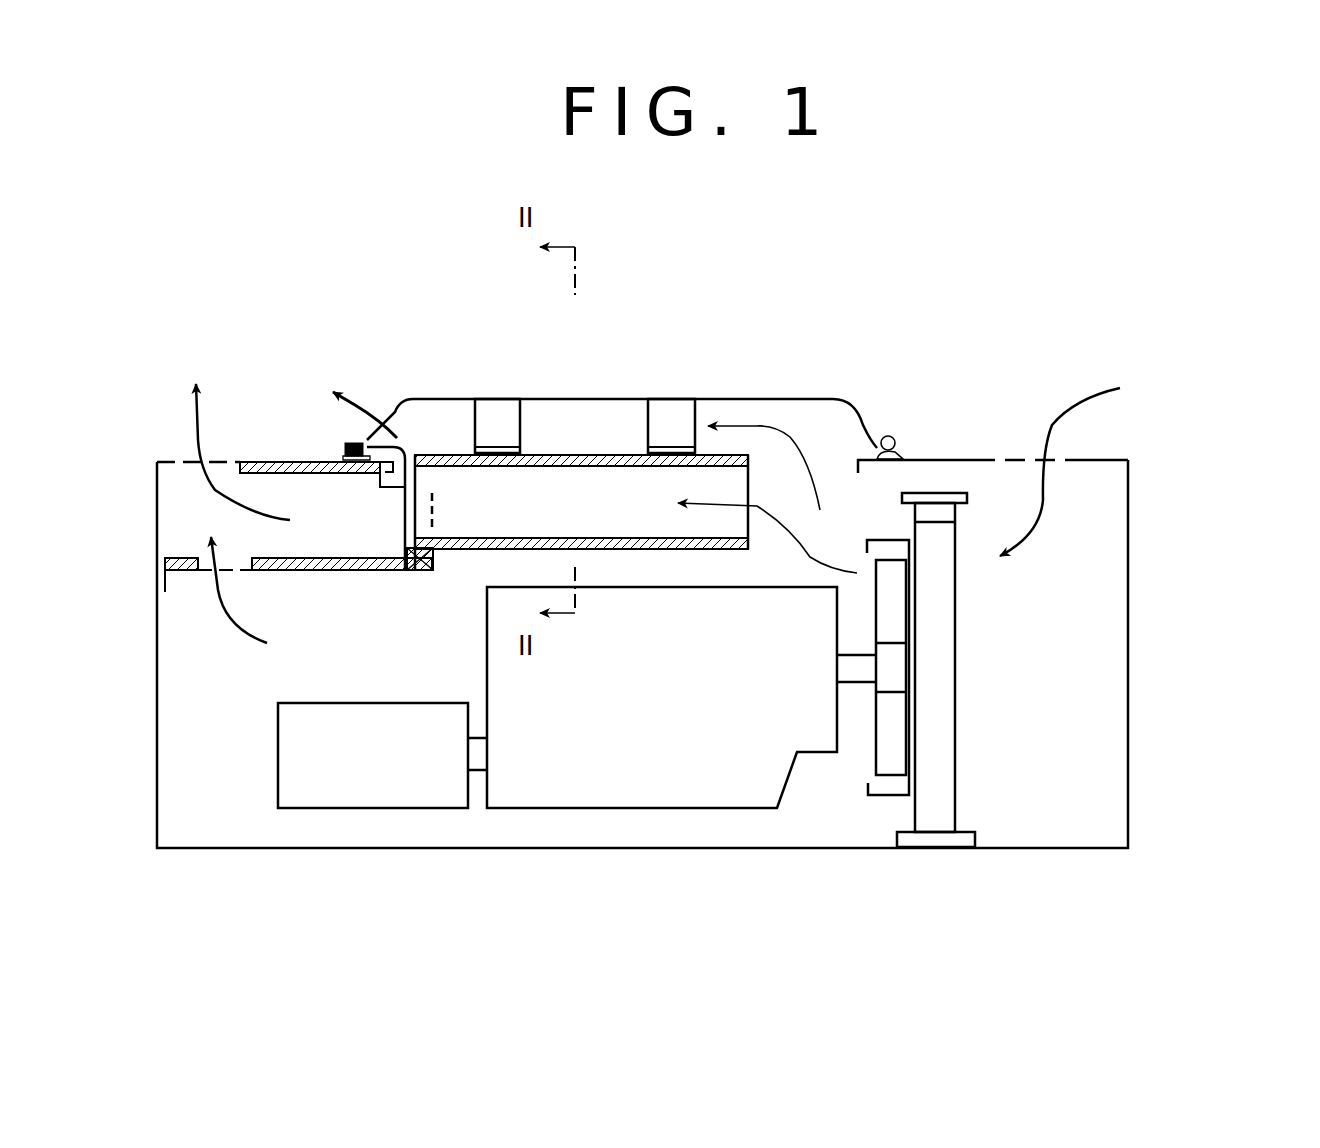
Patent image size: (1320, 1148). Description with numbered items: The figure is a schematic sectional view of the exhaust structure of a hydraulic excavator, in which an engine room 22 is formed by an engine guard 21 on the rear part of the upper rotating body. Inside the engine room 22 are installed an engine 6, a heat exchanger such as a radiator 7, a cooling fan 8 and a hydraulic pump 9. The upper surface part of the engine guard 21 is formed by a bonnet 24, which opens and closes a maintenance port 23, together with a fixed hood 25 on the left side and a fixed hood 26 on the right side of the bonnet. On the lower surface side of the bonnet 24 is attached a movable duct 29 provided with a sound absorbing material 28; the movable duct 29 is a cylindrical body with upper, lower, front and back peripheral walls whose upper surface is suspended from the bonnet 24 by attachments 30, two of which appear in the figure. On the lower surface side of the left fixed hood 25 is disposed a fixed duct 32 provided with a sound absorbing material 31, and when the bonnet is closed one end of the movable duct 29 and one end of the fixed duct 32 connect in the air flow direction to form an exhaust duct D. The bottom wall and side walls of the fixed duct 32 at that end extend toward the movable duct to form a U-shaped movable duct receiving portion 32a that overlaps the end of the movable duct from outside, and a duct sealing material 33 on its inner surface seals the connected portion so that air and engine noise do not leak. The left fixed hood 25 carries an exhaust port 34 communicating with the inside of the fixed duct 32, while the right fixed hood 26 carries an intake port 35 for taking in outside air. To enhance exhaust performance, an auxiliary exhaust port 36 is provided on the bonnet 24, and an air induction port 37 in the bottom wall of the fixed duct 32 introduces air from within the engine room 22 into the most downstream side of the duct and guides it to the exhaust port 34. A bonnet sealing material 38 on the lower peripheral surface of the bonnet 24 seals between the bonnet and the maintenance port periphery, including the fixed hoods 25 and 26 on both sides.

The engine 6 is at (622, 810).
The radiator 7 is at (957, 752).
The cooling fan 8 is at (890, 778).
The hydraulic pump 9 is at (362, 810).
The engine guard 21 is at (1150, 740).
The engine room 22 is at (668, 716).
The maintenance port 23 is at (783, 457).
The bonnet 24 is at (757, 400).
The fixed hood 25 is at (270, 462).
The fixed hood 26 is at (956, 458).
The sound absorbing material 28 is at (607, 541).
The movable duct 29 is at (612, 452).
The attachment 30 is at (495, 410).
The sound absorbing material 31 is at (357, 550).
The fixed duct 32 is at (303, 577).
The movable duct receiving portion 32a is at (434, 505).
The duct sealing material 33 is at (427, 577).
The exhaust port 34 is at (180, 460).
The intake port 35 is at (1015, 458).
The auxiliary exhaust port 36 is at (396, 440).
The air induction port 37 is at (205, 577).
The bonnet sealing material 38 is at (345, 457).
The exhaust duct D is at (433, 444).